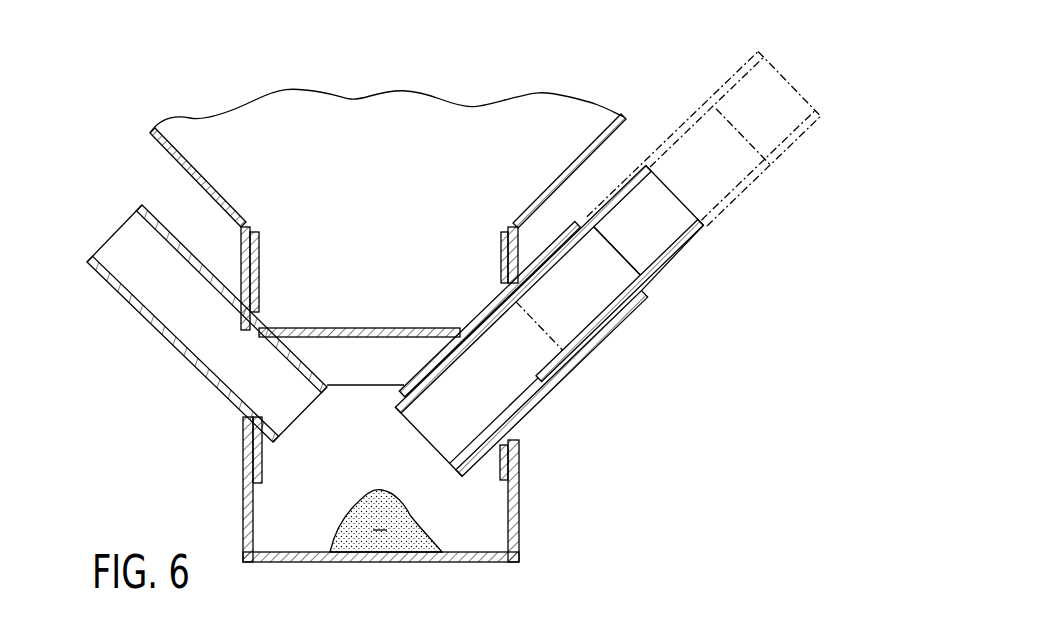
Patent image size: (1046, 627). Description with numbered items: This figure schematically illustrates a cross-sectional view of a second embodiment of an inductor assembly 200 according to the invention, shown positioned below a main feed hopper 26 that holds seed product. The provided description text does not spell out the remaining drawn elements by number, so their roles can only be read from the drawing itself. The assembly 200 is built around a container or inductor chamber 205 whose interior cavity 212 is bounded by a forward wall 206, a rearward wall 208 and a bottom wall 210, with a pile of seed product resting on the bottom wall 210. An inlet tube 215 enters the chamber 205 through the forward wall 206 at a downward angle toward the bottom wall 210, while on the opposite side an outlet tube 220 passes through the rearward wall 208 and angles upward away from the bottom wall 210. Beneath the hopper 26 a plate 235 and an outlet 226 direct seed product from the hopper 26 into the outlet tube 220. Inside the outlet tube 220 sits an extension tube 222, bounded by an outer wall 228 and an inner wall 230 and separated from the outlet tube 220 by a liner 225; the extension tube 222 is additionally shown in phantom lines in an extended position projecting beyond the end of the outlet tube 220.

The main feed hopper 26 is at (158, 143).
The sample delivery assembly 200 is at (648, 427).
The container 205 is at (470, 566).
The container left wall 206 is at (243, 457).
The container right wall 208 is at (520, 468).
The container floor 210 is at (380, 566).
The container interior 212 is at (486, 520).
The inlet tube 215 is at (137, 318).
The outer conduit tube 220 is at (623, 347).
The extension tube 222 is at (587, 219).
The liner 225 is at (545, 386).
The outlet 226 is at (400, 416).
The extension tube outer wall 228 is at (688, 252).
The extension tube inner wall 230 is at (657, 285).
The outlet plate 235 is at (364, 384).